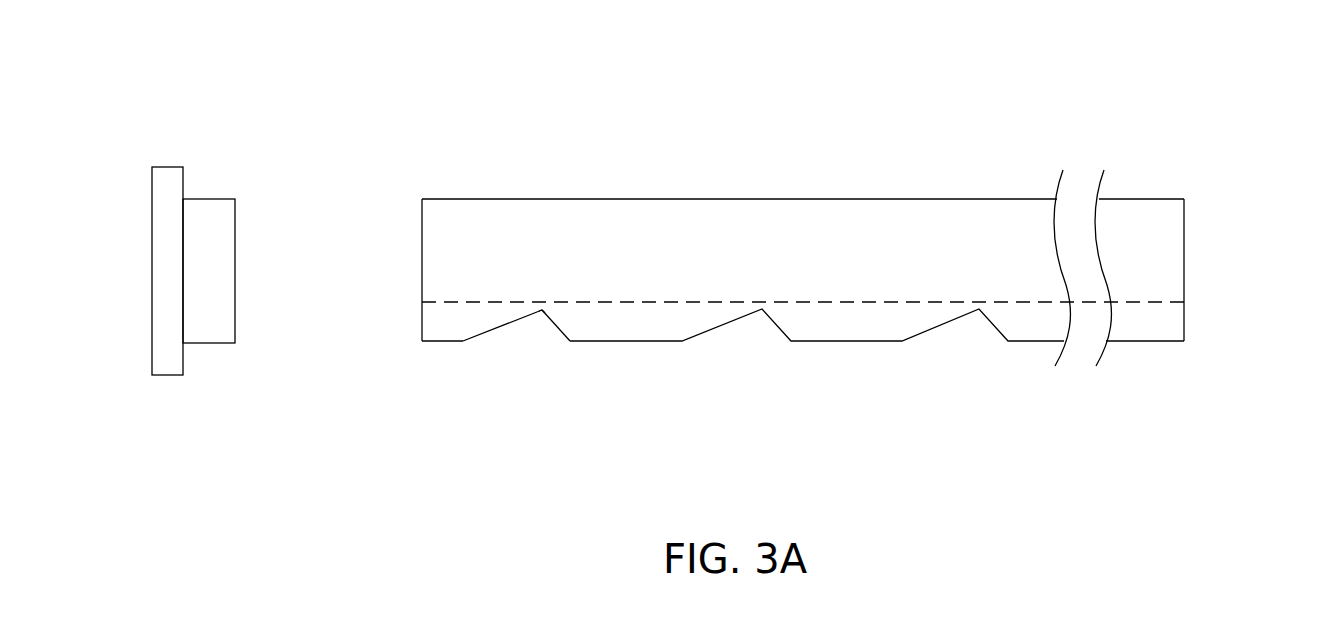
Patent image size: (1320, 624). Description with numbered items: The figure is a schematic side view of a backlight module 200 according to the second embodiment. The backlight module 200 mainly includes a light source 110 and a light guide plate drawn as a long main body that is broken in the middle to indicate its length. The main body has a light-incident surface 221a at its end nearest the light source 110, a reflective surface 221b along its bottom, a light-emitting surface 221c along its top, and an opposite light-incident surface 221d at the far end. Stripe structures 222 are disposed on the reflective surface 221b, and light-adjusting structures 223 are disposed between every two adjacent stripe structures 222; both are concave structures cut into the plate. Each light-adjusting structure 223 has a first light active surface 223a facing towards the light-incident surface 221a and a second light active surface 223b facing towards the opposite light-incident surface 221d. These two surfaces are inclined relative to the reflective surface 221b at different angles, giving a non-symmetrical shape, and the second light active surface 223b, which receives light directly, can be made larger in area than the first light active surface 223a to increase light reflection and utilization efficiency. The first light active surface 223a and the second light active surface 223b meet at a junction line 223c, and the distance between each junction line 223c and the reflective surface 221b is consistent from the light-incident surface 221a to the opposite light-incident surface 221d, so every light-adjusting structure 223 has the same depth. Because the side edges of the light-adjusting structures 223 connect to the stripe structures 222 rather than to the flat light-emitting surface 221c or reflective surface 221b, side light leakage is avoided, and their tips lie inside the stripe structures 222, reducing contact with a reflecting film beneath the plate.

The backlight module 200 is at (138, 56).
The light source 110 is at (163, 271).
The light-incident surface 221a is at (422, 242).
The reflective surface 221b is at (853, 363).
The light-emitting surface 221c is at (757, 199).
The opposite light-incident surface 221d is at (1184, 237).
The stripe structures 222 is at (450, 300).
The light-adjusting structures 223 is at (533, 326).
The first light active surface 223a is at (557, 335).
The second light active surface 223b is at (488, 335).
The junction line 223c is at (542, 310).